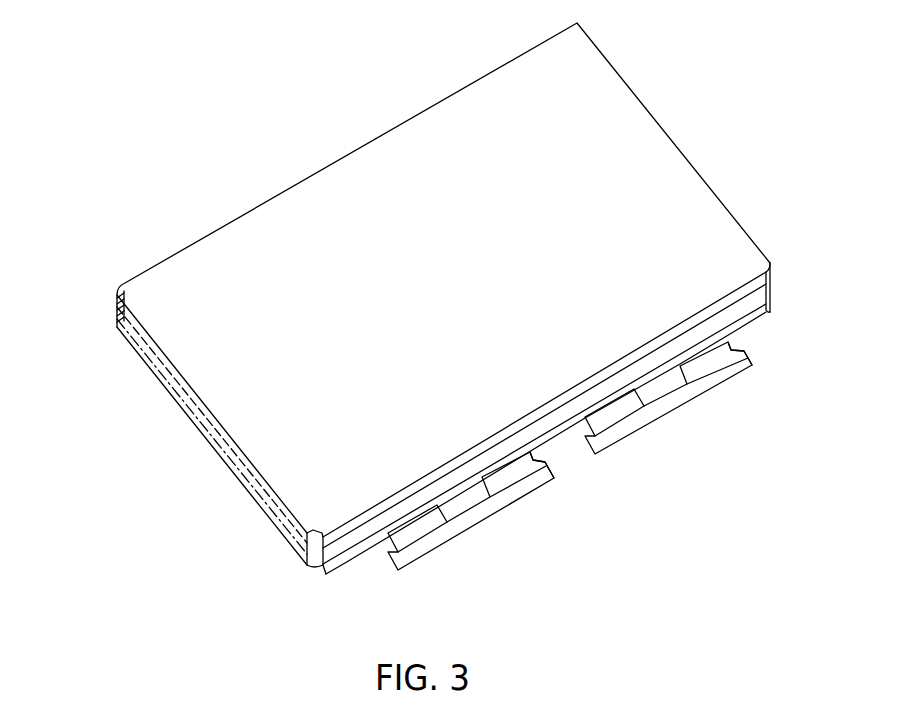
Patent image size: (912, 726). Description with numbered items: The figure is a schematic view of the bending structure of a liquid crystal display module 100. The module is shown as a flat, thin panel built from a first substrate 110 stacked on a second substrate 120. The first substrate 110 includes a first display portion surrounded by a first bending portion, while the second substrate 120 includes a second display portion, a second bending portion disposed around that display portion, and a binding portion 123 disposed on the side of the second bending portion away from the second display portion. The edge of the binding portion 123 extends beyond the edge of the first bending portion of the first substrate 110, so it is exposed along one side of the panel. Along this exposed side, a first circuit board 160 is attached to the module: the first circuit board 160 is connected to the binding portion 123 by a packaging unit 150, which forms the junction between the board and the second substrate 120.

The liquid crystal display module 100 is at (312, 62).
The first substrate 110 is at (124, 281).
The second substrate 120 is at (117, 318).
The binding portion 123 is at (774, 311).
The packaging unit 150 is at (729, 343).
The first circuit board 160 is at (750, 363).